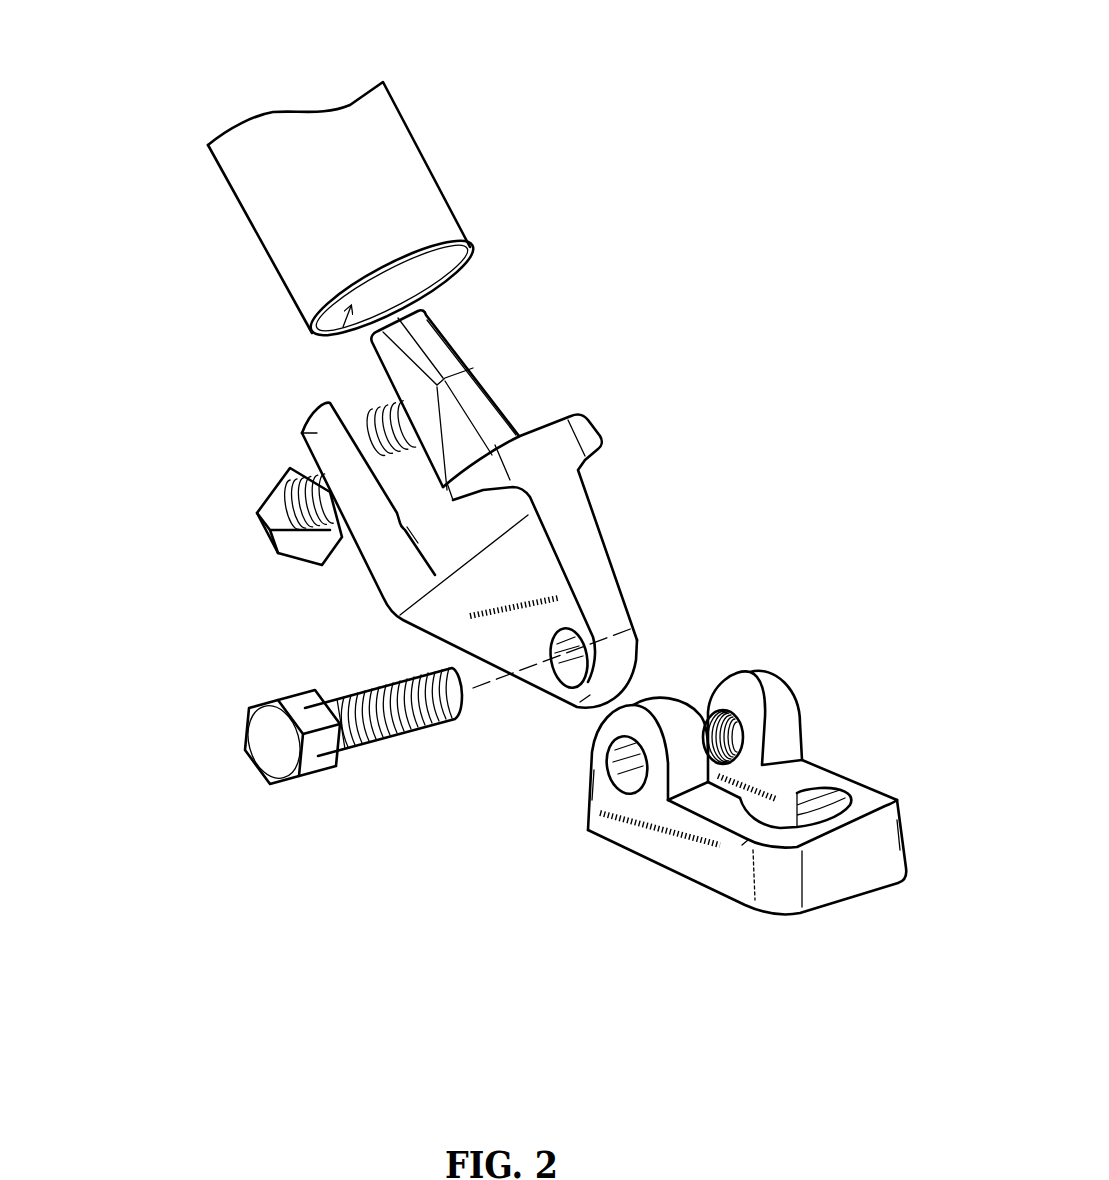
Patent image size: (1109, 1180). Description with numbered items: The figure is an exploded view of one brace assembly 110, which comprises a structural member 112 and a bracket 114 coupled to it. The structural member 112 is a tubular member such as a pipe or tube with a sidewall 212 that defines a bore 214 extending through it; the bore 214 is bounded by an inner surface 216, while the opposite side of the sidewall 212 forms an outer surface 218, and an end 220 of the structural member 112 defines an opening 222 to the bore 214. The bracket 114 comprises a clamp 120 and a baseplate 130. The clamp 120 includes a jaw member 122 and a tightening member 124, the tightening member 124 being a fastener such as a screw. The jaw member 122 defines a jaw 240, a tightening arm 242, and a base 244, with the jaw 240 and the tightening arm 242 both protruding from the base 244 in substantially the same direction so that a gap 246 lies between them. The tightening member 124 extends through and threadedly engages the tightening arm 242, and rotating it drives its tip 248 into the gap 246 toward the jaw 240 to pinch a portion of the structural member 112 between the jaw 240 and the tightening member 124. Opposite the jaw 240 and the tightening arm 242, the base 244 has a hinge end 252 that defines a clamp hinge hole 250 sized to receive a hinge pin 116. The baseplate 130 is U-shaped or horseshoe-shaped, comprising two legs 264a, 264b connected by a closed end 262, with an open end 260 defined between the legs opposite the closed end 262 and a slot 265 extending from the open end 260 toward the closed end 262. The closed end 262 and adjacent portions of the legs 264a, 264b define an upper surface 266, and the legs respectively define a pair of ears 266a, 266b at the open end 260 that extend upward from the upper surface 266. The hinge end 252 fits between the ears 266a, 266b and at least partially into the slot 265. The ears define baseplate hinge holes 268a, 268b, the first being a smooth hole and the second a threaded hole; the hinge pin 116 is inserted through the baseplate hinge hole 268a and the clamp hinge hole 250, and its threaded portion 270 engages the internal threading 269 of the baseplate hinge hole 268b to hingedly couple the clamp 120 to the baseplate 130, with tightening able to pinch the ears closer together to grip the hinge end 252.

The brace assembly 110 is at (130, 108).
The structural member 112 is at (429, 197).
The outer surface 218 is at (429, 197).
The sidewall 212 is at (475, 288).
The end 220 is at (475, 288).
The opening 222 is at (420, 274).
The bore 214 is at (332, 338).
The inner surface 216 is at (420, 312).
The jaw 240 is at (492, 400).
The clamp 120 is at (648, 452).
The jaw member 122 is at (545, 604).
The base 244 is at (545, 604).
The tightening member 124 is at (274, 483).
The tip 248 is at (274, 483).
The tightening arm 242 is at (395, 403).
The gap 246 is at (413, 460).
The bracket 114 is at (150, 612).
The hinge pin 116 is at (298, 741).
The threaded portion 270 is at (396, 735).
The clamp hinge hole 250 is at (552, 668).
The hinge end 252 is at (585, 706).
The baseplate 130 is at (720, 760).
The closed end 262 is at (720, 760).
The leg 264a is at (693, 843).
The leg 264b is at (847, 794).
The ear 266a is at (598, 693).
The ear 266b is at (827, 691).
The baseplate hinge hole 268a is at (643, 777).
The baseplate hinge hole 268b is at (737, 730).
The internal threading 269 is at (809, 674).
The slot 265 is at (784, 800).
The open end 260 is at (593, 820).
The upper surface 266 is at (745, 845).